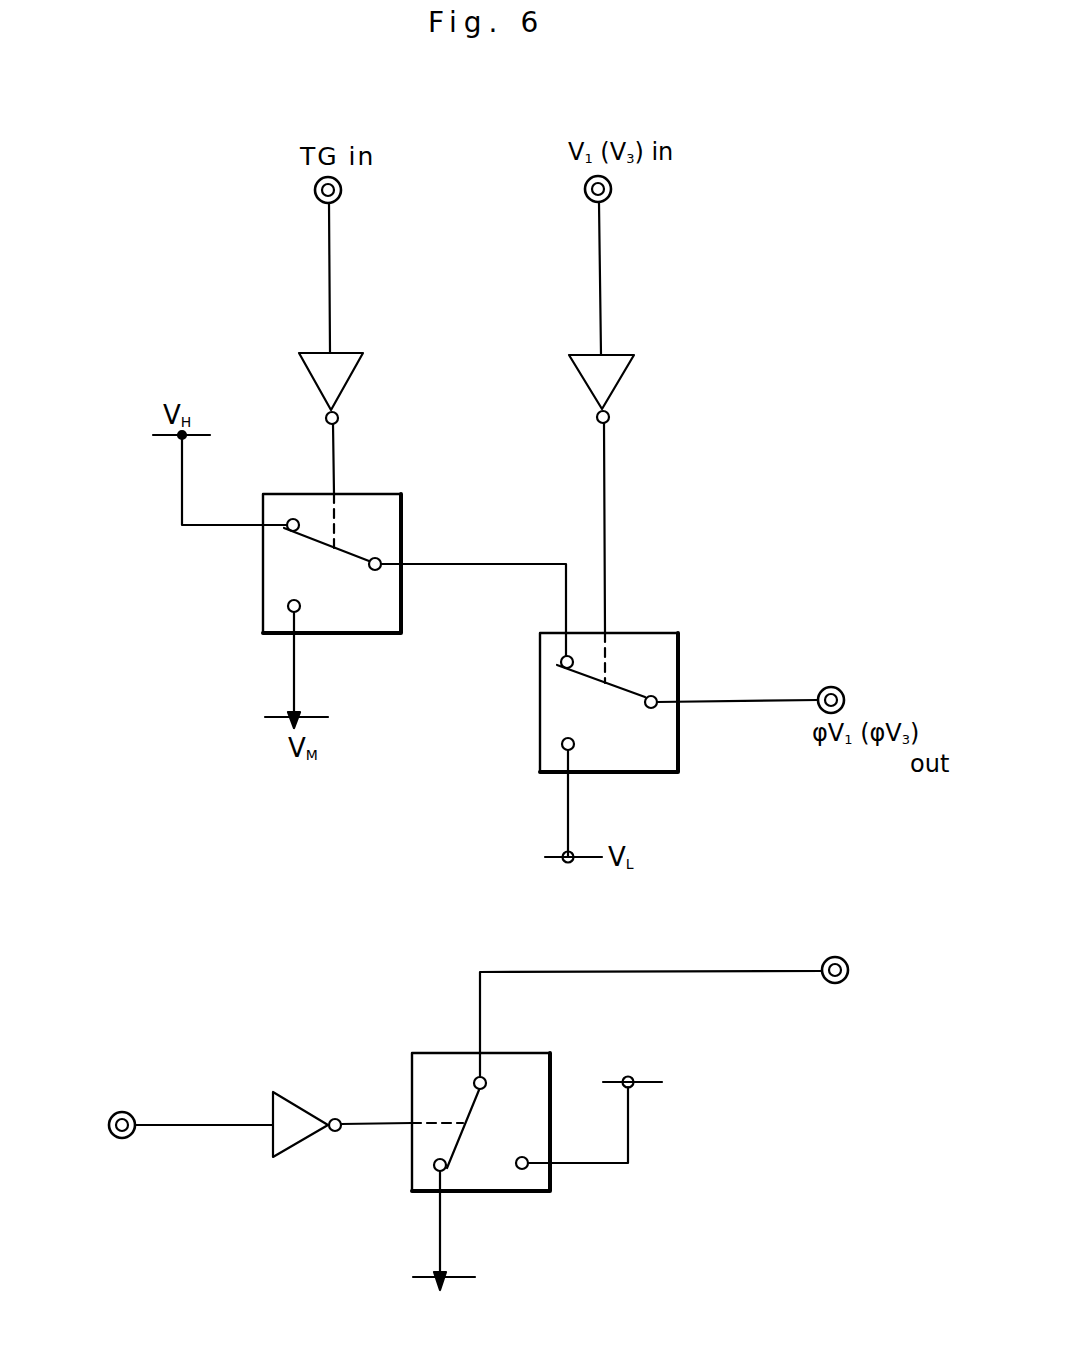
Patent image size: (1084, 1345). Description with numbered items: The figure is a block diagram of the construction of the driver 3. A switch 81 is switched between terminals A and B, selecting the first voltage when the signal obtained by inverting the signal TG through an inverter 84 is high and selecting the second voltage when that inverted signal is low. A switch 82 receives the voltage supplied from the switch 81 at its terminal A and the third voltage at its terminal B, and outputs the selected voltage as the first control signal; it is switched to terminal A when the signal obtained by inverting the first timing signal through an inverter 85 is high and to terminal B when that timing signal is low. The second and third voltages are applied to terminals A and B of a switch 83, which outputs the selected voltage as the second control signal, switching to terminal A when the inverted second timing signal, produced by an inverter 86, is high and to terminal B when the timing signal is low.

The driver 3 is at (515, 1140).
The switch 81 is at (402, 515).
The switch 82 is at (648, 630).
The switch 83 is at (452, 1052).
The inverter 84 is at (353, 378).
The inverter 85 is at (623, 378).
The inverter 86 is at (305, 1138).